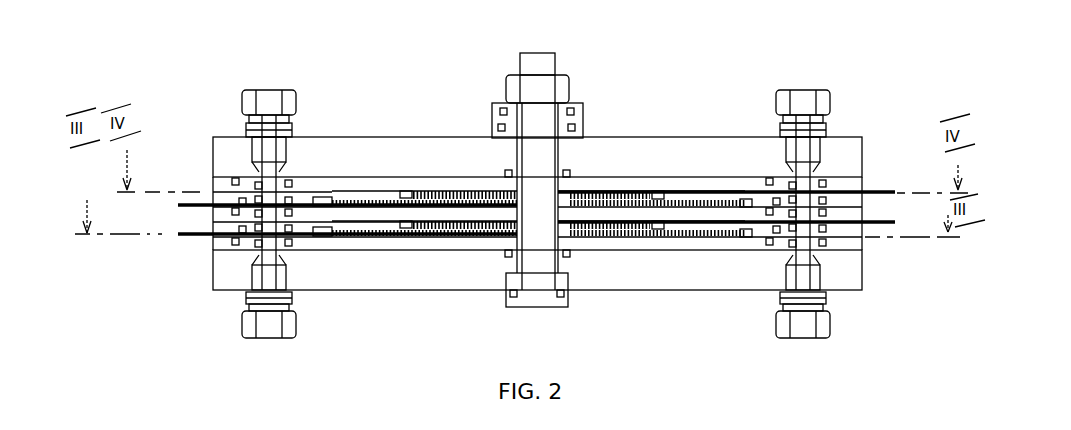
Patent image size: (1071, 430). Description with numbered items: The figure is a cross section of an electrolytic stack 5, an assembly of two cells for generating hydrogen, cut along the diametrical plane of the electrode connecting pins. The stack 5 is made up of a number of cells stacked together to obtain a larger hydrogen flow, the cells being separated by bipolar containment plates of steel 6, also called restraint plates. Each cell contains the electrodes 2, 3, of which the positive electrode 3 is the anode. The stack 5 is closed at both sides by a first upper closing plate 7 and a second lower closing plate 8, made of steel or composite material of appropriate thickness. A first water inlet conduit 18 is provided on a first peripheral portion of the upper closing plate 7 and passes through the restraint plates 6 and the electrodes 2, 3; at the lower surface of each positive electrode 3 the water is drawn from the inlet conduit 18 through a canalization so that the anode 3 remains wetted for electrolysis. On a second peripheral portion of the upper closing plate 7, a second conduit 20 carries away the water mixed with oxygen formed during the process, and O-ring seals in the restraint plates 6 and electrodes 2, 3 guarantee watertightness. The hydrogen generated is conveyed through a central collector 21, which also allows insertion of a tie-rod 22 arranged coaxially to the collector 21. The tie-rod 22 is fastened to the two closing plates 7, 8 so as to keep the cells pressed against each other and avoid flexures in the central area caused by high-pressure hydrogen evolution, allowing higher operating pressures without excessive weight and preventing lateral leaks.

The electrode 2 is at (873, 192).
The positive electrode 3 is at (188, 208).
The electrolytic stack 5 is at (670, 312).
The bipolar containment plate 6 is at (862, 192).
The first upper closing plate 7 is at (657, 148).
The second lower closing plate 8 is at (418, 275).
The first water inlet conduit 18 is at (802, 85).
The second conduit 20 is at (270, 8).
The central collector 21 is at (513, 160).
The tie-rod 22 is at (543, 153).